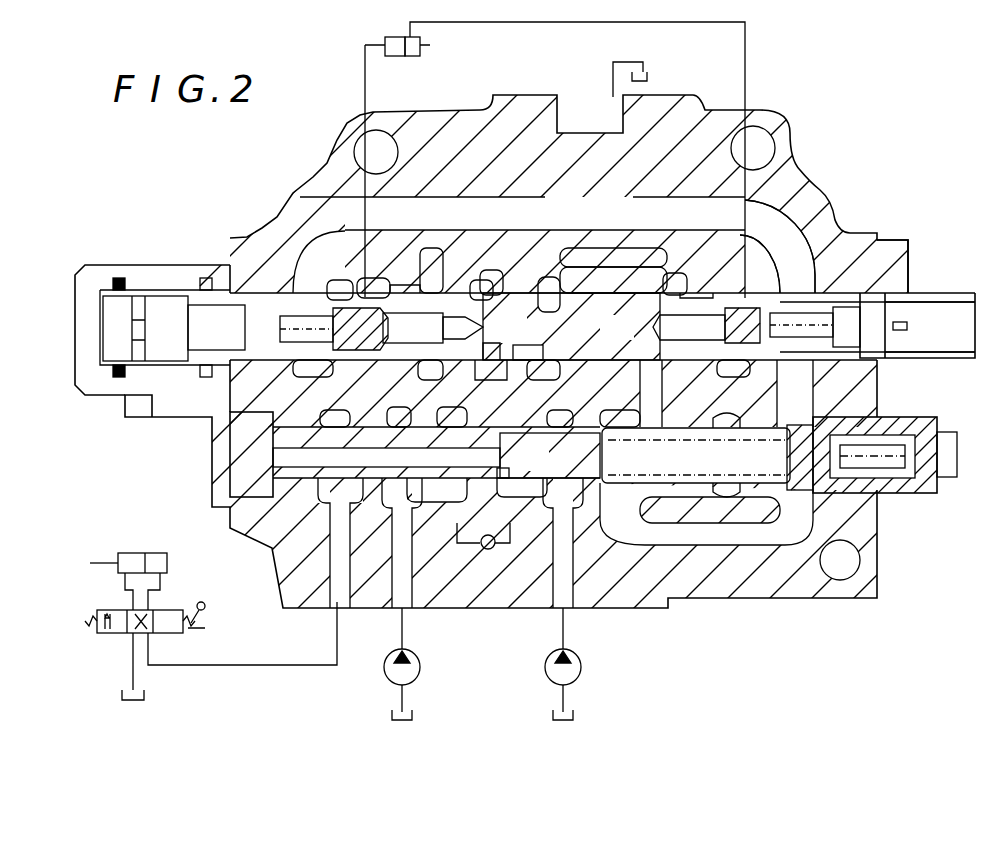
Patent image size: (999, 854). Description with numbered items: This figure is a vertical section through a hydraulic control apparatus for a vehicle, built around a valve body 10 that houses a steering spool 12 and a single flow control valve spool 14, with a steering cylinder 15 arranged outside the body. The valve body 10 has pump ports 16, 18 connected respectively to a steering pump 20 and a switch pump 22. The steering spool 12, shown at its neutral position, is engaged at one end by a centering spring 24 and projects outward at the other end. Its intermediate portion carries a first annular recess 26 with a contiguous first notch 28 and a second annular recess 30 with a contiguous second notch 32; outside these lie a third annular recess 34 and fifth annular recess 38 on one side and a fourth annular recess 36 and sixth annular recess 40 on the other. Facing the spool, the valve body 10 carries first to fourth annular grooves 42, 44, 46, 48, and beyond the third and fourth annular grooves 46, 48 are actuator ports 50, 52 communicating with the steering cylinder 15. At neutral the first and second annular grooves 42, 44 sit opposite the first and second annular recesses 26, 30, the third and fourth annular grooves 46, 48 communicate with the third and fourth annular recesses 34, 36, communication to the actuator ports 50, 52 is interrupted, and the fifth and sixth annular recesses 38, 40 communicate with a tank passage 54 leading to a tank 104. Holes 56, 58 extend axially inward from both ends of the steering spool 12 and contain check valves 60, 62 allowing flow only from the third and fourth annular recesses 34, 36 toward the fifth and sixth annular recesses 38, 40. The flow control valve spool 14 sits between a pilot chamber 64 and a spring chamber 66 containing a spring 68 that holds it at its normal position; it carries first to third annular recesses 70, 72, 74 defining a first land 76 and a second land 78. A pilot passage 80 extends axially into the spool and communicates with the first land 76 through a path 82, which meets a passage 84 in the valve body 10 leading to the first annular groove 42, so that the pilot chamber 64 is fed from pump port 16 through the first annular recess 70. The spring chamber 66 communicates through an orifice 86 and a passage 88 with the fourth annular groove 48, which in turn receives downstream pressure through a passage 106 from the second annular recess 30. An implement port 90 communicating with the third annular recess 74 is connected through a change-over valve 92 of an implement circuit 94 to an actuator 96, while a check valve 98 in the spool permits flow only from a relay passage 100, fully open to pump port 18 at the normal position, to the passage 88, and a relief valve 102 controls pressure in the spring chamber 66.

The valve body 10 is at (315, 193).
The steering spool 12 is at (950, 293).
The flow control valve spool 14 is at (311, 485).
The steering cylinder 15 is at (392, 57).
The pump port 16 is at (560, 582).
The pump port 18 is at (397, 588).
The steering pump 20 is at (580, 680).
The switch pump 22 is at (420, 680).
The centering spring 24 is at (122, 277).
The first annular recess 26 is at (502, 272).
The first notch 28 is at (505, 300).
The second annular recess 30 is at (550, 284).
The second notch 32 is at (530, 357).
The third annular recess 34 is at (404, 285).
The fourth annular recess 36 is at (690, 300).
The fifth annular recess 38 is at (340, 267).
The sixth annular recess 40 is at (762, 286).
The first annular groove 42 is at (470, 272).
The second annular groove 44 is at (566, 282).
The third annular groove 46 is at (433, 283).
The fourth annular groove 48 is at (664, 272).
The actuator port 50 is at (376, 282).
The actuator port 52 is at (735, 290).
The tank passage 54 is at (777, 203).
The hole 56 is at (440, 322).
The hole 58 is at (650, 324).
The check valve 60 is at (380, 324).
The check valve 62 is at (728, 326).
The pilot chamber 64 is at (212, 462).
The spring chamber 66 is at (728, 470).
The spring 68 is at (613, 486).
The first annular recess 70 is at (566, 435).
The second annular recess 72 is at (431, 430).
The third annular recess 74 is at (340, 435).
The first land 76 is at (489, 440).
The second land 78 is at (397, 433).
The pilot passage 80 is at (297, 457).
The path 82 is at (512, 477).
The passage 84 is at (527, 502).
The orifice 86 is at (662, 432).
The passage 88 is at (672, 388).
The implement port 90 is at (343, 534).
The change-over valve 92 is at (187, 610).
The implement circuit 94 is at (126, 712).
The actuator 96 is at (131, 553).
The check valve 98 is at (495, 552).
The relay passage 100 is at (443, 505).
The relief valve 102 is at (852, 493).
The tank 104 is at (647, 76).
The passage 106 is at (608, 250).